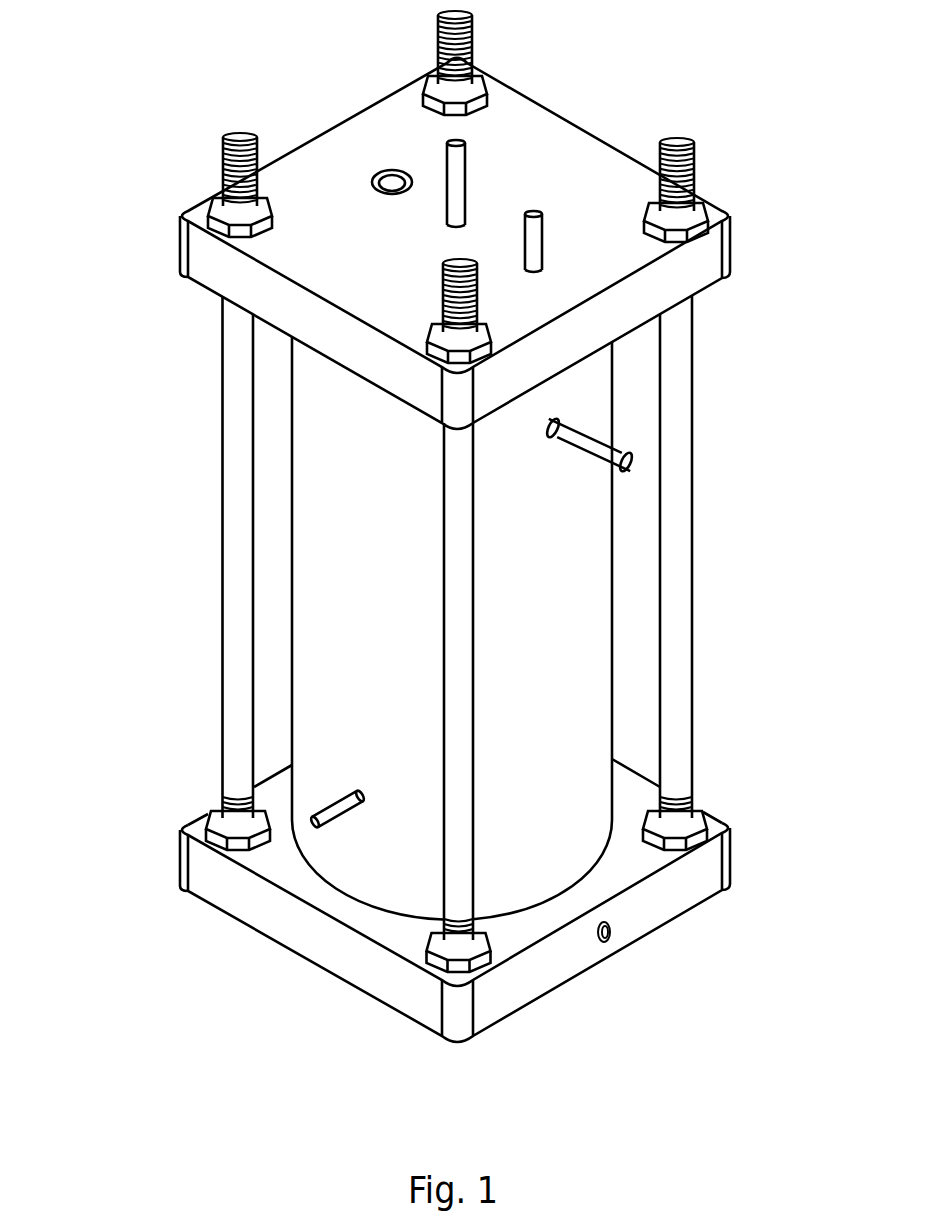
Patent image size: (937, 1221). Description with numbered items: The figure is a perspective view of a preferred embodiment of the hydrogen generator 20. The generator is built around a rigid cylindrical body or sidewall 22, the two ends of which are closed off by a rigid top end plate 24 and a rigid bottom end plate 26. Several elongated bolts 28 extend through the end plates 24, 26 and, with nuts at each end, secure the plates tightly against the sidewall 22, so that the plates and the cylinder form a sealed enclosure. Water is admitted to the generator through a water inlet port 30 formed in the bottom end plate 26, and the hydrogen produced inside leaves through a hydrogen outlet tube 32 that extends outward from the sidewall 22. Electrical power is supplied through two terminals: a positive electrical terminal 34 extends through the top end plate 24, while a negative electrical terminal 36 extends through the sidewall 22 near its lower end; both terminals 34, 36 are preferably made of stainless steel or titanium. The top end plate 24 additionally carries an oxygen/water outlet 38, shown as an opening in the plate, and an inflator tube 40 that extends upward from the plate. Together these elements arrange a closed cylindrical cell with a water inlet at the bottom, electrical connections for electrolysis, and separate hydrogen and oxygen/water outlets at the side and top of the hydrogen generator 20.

The hydrogen generator 20 is at (140, 128).
The cylindrical body or sidewall 22 is at (548, 591).
The top end plate 24 is at (733, 243).
The bottom end plate 26 is at (731, 855).
The elongated bolts 28 is at (222, 545).
The water inlet port 30 is at (612, 935).
The hydrogen outlet tube 32 is at (583, 456).
The positive electrical terminal 34 is at (544, 238).
The negative electrical terminal 36 is at (340, 822).
The oxygen/water outlet 38 is at (392, 172).
The inflator tube 40 is at (470, 182).